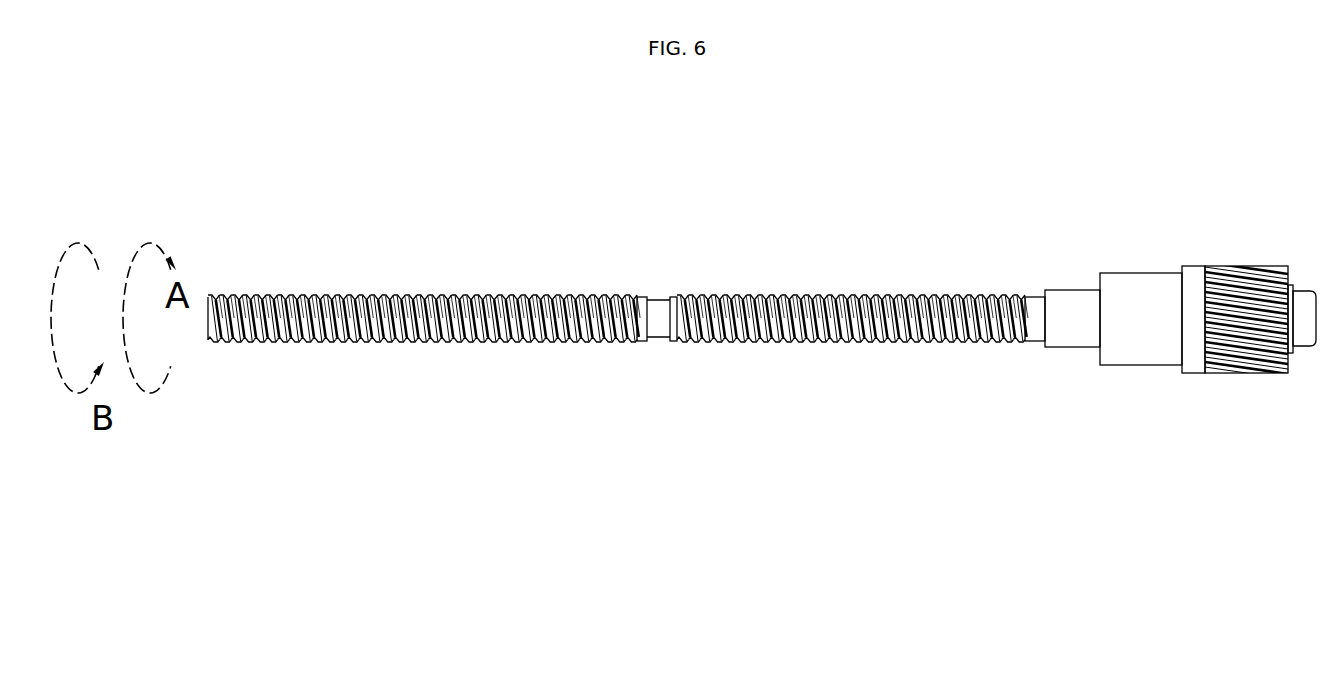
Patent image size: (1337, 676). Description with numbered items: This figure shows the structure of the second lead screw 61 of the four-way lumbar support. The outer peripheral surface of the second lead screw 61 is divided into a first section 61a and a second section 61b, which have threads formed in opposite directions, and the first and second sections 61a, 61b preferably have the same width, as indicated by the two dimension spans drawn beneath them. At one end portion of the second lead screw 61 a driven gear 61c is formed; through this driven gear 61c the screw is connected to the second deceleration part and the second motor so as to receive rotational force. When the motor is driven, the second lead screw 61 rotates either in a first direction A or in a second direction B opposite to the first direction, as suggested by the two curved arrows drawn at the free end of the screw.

The second lead screw 61 is at (268, 251).
The first section 61a is at (647, 440).
The second section 61b is at (670, 345).
The driven gear 61c is at (1243, 374).